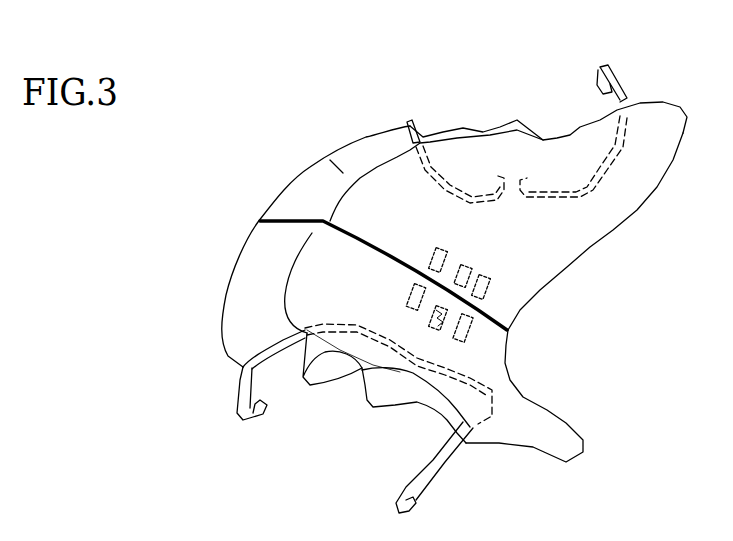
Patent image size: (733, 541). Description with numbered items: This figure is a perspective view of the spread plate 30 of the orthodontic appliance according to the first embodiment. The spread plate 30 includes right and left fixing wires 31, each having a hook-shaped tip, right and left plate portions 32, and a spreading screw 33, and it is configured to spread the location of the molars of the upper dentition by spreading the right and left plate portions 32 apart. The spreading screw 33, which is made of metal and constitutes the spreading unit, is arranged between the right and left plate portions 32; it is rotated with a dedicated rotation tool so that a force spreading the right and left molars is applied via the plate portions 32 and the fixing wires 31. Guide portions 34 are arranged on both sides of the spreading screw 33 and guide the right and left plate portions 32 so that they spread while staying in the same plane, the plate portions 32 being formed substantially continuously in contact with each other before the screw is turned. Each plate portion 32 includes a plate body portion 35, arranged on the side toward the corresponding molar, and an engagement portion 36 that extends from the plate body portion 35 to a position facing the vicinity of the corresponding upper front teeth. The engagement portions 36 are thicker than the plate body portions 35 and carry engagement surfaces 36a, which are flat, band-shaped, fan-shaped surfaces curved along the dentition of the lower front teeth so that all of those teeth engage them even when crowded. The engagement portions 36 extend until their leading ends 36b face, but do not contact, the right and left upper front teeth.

The spread plate 30 is at (483, 112).
The fixing wire 31 is at (233, 403).
The plate portion 32 is at (593, 220).
The spreading screw 33 is at (468, 258).
The guide portion 34 is at (445, 248).
The plate body portion 35 is at (588, 240).
The engagement portion 36 is at (350, 148).
The engagement surface 36a is at (320, 160).
The leading end 36b is at (280, 197).